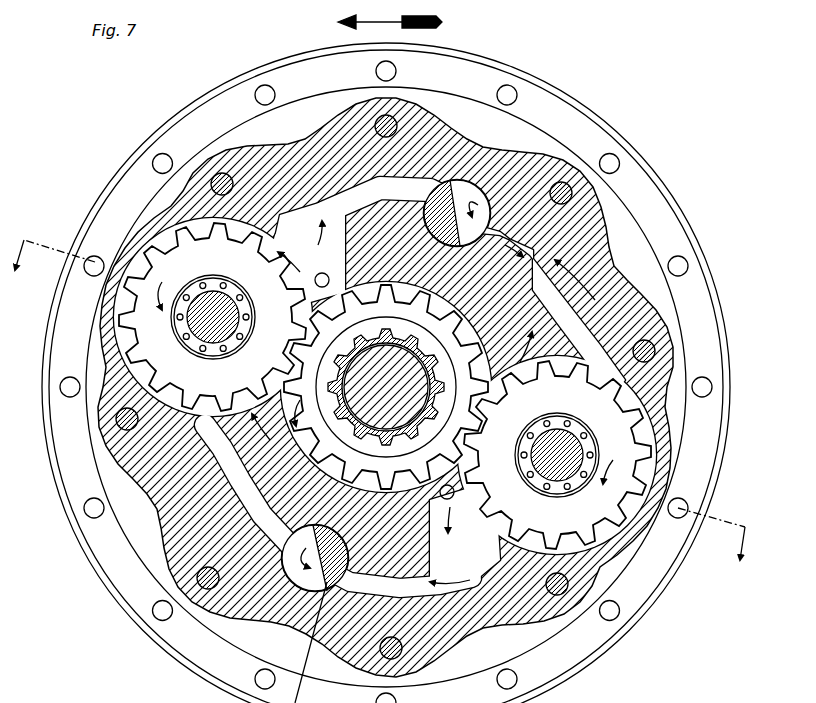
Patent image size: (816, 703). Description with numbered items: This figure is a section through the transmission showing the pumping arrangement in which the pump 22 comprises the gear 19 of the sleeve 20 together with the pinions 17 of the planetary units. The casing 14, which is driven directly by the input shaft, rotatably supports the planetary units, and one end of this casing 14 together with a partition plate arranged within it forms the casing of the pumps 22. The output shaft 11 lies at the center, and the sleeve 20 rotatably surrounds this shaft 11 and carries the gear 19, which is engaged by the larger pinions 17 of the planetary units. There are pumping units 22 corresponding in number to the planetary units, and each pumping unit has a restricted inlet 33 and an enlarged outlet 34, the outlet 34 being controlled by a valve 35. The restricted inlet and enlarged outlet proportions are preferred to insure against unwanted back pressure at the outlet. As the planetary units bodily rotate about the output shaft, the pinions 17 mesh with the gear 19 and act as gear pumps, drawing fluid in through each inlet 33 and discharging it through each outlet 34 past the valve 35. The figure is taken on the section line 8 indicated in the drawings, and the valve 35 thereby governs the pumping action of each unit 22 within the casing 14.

The section line 8- 8 is at (390, 388).
The output shaft 11 is at (392, 366).
The casing 14 is at (218, 103).
The larger pinion 17 is at (550, 386).
The gear 19 is at (432, 452).
The sleeve 20 is at (430, 358).
The pump 22 is at (127, 233).
The restricted inlet 33 is at (382, 386).
The enlarged outlet 34 is at (573, 178).
The valve 35 is at (447, 190).